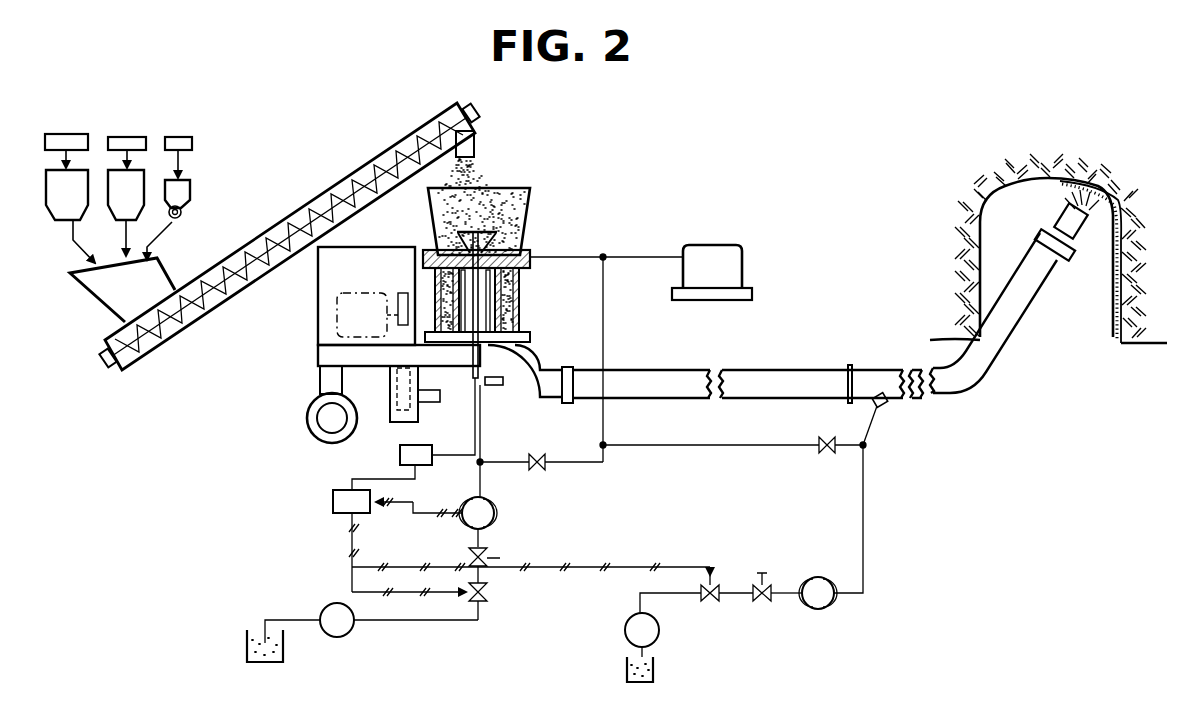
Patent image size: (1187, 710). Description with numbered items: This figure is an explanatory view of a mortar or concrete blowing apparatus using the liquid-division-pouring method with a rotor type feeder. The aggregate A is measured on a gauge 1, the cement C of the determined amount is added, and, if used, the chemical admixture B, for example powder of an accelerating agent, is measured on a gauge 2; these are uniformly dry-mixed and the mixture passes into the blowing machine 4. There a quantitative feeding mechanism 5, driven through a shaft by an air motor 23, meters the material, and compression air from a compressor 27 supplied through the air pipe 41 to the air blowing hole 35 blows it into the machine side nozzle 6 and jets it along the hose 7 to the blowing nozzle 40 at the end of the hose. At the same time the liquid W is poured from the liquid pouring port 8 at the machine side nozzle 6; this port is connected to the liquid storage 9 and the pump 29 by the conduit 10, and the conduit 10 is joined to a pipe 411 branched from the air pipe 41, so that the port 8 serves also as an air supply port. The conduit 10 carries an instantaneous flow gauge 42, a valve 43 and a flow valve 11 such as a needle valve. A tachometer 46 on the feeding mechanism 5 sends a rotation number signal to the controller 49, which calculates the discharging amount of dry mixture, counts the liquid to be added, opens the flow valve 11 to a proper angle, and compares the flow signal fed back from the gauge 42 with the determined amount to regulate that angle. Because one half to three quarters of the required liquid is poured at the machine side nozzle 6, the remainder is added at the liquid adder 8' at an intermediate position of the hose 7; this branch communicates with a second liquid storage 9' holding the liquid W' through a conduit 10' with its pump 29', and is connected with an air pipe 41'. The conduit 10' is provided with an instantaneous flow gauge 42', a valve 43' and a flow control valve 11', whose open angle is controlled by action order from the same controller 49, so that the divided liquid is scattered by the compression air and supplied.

The gauge 1 is at (58, 207).
The gauge 2 is at (183, 196).
The blowing machine 4 is at (534, 213).
The feeding mechanism 5 is at (518, 302).
The machine side nozzle 6 is at (548, 368).
The hose 7 is at (787, 370).
The liquid pouring port 8 is at (498, 404).
The liquid adder 8' is at (894, 421).
The liquid storage 9 is at (238, 637).
The liquid storage 9' is at (612, 670).
The conduit 10 is at (487, 592).
The conduit 10' is at (887, 519).
The flow valve 11 is at (444, 601).
The flow control valve 11' is at (687, 607).
The air motor 23 is at (345, 318).
The compressor 27 is at (718, 258).
The pump 29 is at (318, 604).
The pump 29' is at (614, 635).
The air blowing hole 35 is at (528, 248).
The blowing nozzle 40 is at (1072, 236).
The air pipe 41 is at (606, 326).
The air pipe 41' is at (734, 464).
The pipe 411 is at (578, 463).
The instantaneous flow gauge 42 is at (505, 466).
The instantaneous flow gauge 42' is at (810, 611).
The valve 43 is at (510, 559).
The valve 43' is at (752, 609).
The tachometer 46 is at (400, 455).
The controller 49 is at (333, 502).
The aggregate A is at (66, 134).
The chemical admixture B is at (180, 137).
The cement C is at (128, 137).
The liquid W is at (308, 674).
The liquid W' is at (689, 681).